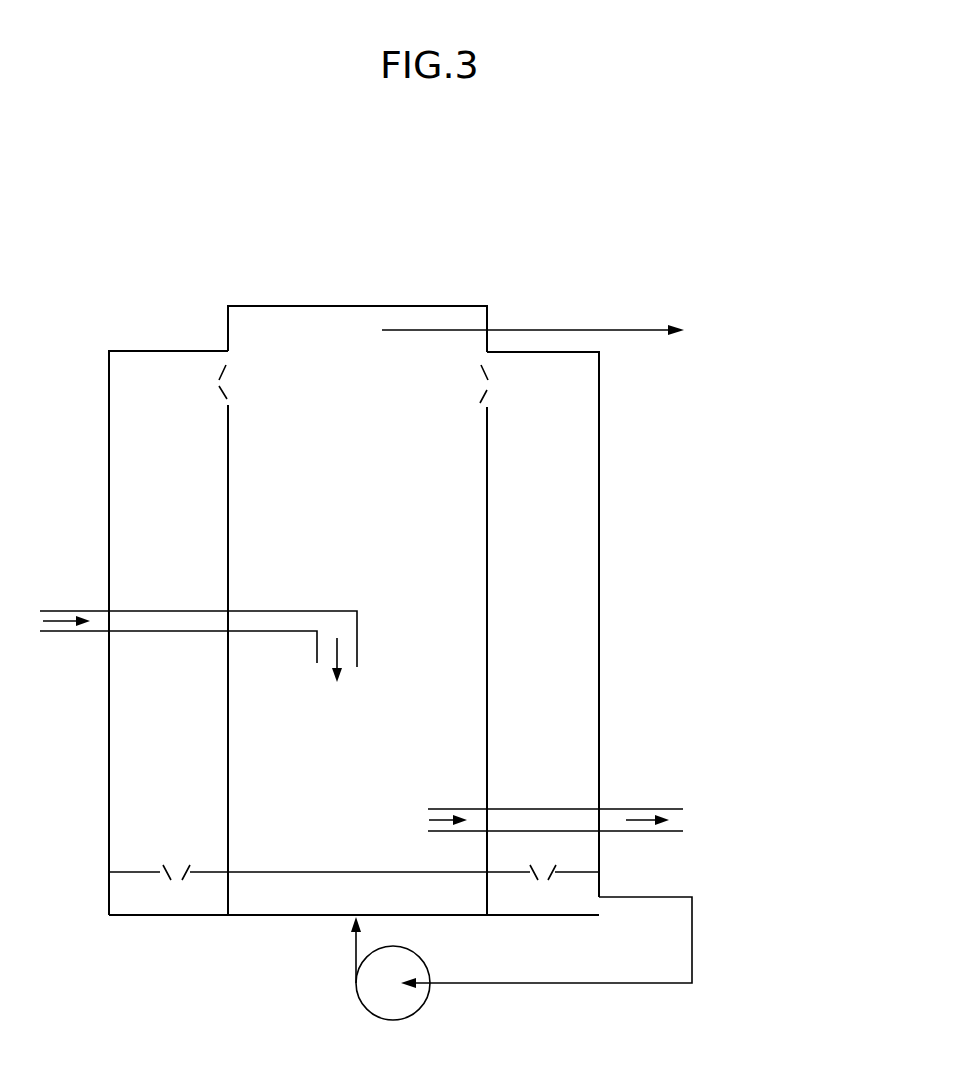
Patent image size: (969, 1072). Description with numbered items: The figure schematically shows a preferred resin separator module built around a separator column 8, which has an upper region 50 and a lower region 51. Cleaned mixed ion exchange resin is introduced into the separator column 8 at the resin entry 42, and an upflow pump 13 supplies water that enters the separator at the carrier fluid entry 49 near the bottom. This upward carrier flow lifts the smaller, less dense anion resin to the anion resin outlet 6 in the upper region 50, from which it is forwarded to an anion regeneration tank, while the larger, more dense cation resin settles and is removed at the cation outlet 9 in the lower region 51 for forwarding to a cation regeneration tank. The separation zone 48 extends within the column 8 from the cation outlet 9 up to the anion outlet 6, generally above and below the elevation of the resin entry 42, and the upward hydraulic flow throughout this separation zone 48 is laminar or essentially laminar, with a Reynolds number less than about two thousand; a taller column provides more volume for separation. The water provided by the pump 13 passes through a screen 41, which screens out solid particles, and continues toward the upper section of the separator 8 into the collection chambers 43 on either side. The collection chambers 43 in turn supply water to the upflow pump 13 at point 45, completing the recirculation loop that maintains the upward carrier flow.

The separator column 8 is at (357, 293).
The anion resin outlet 6 is at (593, 316).
The collection chambers 43 is at (354, 633).
The upper region 50 is at (353, 640).
The separation zone 48 is at (198, 620).
The resin entry 42 is at (197, 648).
The lower region 51 is at (350, 756).
The screen 41 is at (350, 829).
The cation outlet 9 is at (626, 818).
The carrier fluid entry 49 is at (333, 950).
The pump supply point 45 is at (546, 942).
The upflow pump 13 is at (390, 1001).